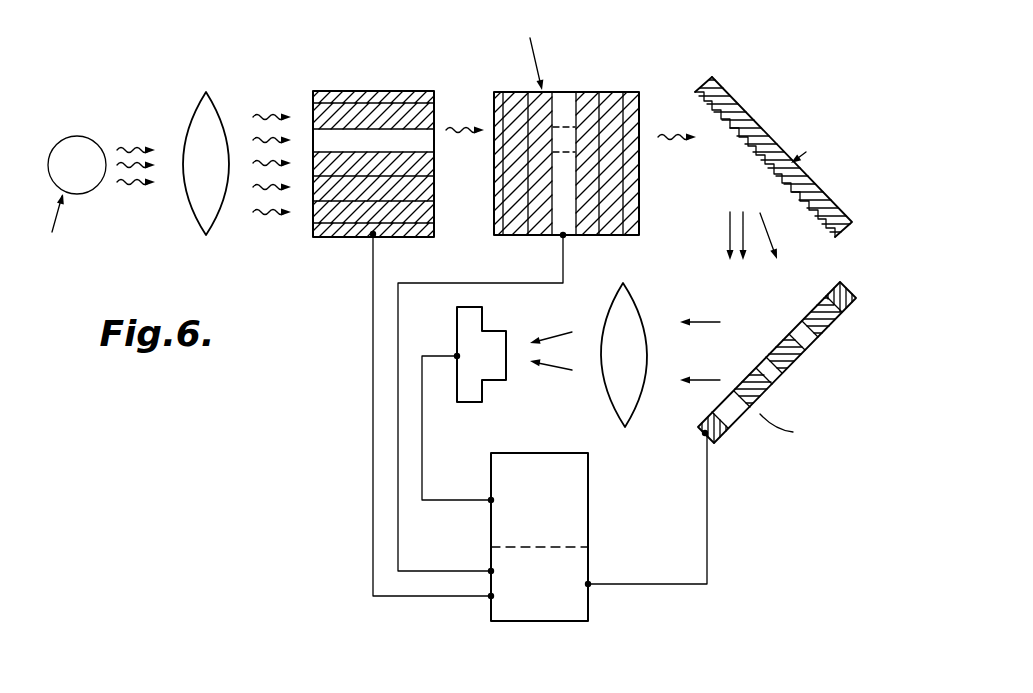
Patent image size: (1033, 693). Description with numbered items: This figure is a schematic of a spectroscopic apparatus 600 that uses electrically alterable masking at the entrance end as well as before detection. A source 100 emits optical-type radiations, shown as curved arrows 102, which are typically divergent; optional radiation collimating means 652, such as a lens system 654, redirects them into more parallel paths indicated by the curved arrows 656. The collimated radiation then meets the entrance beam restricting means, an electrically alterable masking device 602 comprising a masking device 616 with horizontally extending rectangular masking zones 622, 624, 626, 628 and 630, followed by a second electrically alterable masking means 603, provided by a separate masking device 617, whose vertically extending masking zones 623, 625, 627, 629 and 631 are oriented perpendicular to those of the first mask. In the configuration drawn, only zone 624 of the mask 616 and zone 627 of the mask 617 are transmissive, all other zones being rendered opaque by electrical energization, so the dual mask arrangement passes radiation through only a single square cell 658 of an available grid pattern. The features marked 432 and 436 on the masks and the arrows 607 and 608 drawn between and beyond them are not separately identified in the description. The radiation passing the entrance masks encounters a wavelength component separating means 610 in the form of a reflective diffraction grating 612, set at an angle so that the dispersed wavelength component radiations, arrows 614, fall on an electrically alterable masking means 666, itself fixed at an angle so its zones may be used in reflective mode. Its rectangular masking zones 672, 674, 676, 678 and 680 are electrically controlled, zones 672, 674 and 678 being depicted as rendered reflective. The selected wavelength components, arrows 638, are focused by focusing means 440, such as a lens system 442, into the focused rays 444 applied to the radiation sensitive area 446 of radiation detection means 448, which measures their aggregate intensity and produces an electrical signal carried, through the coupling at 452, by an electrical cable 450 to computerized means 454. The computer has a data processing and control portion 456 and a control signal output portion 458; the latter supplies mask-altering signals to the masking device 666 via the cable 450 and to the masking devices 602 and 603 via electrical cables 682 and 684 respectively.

The source 100 is at (72, 134).
The radiations 102 is at (126, 180).
The lens system 654 is at (188, 115).
The radiation collimating means 652 is at (220, 84).
The collimated radiations 656 is at (260, 216).
The mask frame 432 is at (312, 94).
The masking device 616 is at (355, 90).
The electrically alterable masking device 602 is at (402, 88).
The masking zone 622 is at (435, 105).
The light passing through mask 607 is at (464, 119).
The masking zone 624 is at (435, 147).
The masking zone 626 is at (435, 172).
The masking zone 628 is at (435, 195).
The masking zone 630 is at (435, 222).
The mask connection terminal 436 is at (368, 241).
The electrical cable 684 is at (434, 282).
The masking zone 625 is at (533, 91).
The masking zone 627 is at (562, 90).
The second electrically alterable masking means 603 is at (592, 86).
The masking device 617 is at (618, 91).
The light exiting second mask 608 is at (677, 123).
The transmissive cell 658 is at (568, 150).
The masking zone 623 is at (519, 240).
The masking zone 629 is at (590, 237).
The masking zone 631 is at (611, 239).
The wavelength component separating means 610 is at (722, 70).
The reflective diffraction grating 612 is at (754, 118).
The dispersed wavelength component radiations 614 is at (773, 230).
The electrically alterable masking means 666 is at (841, 281).
The masking zone 672 is at (828, 323).
The masking zone 674 is at (814, 350).
The masking zone 676 is at (796, 370).
The masking zone 678 is at (760, 411).
The masking zone 680 is at (734, 415).
The selected wavelength component radiations 638 is at (708, 321).
The focusing means 440 is at (650, 288).
The lens system 442 is at (620, 417).
The radiation detection means 448 is at (490, 304).
The radiation sensitive area 446 is at (512, 340).
The focused wavelength component radiations 444 is at (553, 367).
The electrical coupling 452 is at (448, 354).
The computer means 454 is at (505, 449).
The data processing and computer control portion 456 is at (589, 497).
The control signal output portion 458 is at (590, 566).
The electrical cable 450 is at (708, 557).
The electrical cable 682 is at (371, 421).
The spectroscopic apparatus 600 is at (289, 351).